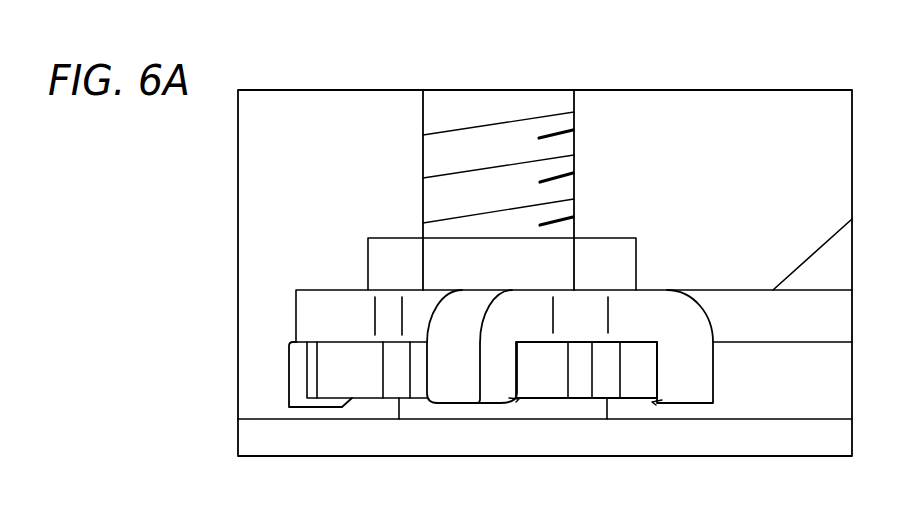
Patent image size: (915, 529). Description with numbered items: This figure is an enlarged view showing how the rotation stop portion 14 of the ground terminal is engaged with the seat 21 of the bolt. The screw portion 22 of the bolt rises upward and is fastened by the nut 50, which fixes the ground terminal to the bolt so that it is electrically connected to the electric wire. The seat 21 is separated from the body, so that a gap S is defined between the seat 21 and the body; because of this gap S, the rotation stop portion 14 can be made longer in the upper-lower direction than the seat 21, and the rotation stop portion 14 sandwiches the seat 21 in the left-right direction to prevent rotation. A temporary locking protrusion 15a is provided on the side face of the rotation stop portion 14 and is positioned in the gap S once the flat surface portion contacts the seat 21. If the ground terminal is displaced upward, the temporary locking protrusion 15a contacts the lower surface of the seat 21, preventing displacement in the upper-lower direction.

The screw portion 22 is at (423, 147).
The nut 50 is at (604, 238).
The seat 21 is at (327, 367).
The rotation stop portion 14 is at (438, 377).
The temporary locking protrusion 15a is at (519, 399).
The gap S is at (557, 420).